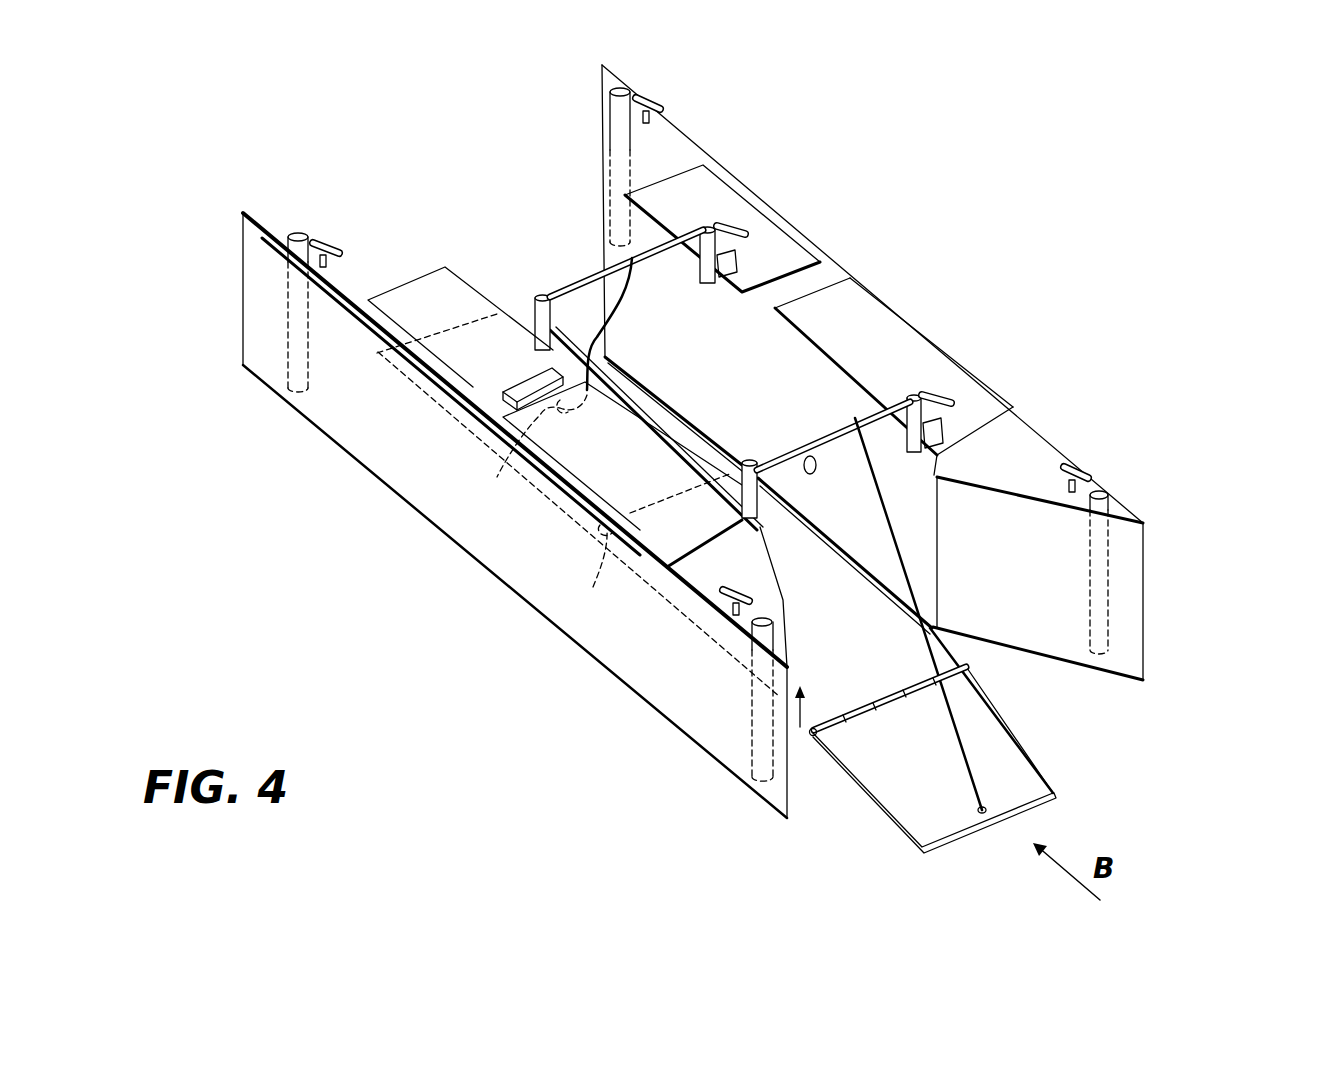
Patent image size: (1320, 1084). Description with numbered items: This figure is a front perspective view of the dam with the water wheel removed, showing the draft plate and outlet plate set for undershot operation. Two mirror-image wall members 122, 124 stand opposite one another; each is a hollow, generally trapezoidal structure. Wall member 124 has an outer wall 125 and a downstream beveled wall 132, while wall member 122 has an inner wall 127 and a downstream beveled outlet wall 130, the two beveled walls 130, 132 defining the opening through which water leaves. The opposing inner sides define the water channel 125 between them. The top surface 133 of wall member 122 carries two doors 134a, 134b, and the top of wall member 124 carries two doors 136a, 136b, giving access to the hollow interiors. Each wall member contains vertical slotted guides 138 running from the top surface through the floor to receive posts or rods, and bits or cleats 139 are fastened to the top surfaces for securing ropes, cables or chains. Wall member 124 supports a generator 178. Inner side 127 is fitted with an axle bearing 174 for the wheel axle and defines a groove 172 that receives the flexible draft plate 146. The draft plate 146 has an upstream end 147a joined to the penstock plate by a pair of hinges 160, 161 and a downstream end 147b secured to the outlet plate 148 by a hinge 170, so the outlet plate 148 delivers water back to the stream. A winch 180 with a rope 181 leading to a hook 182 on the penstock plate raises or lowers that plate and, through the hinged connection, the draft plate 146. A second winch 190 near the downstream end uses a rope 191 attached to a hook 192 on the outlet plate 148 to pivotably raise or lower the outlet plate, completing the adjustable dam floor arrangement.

The wall member 122 is at (1198, 607).
The wall member 124 is at (661, 737).
The outer wall 125 is at (521, 302).
The inner wall 127 is at (692, 300).
The downstream beveled outlet wall 130 is at (1050, 637).
The downstream beveled wall 132 is at (790, 752).
The top surface 133 is at (1012, 463).
The door 134a is at (707, 195).
The door 134b is at (855, 303).
The door 136a is at (428, 298).
The door 136b is at (572, 455).
The slotted guide 138 is at (297, 232).
The bit or cleat 139 is at (322, 243).
The flexible draft plate 146 is at (815, 735).
The upstream end 147a is at (770, 508).
The downstream end 147b is at (863, 671).
The outlet plate 148 is at (930, 779).
The hinge 160 is at (737, 468).
The hinge 161 is at (590, 569).
The hinge 170 is at (978, 668).
The groove 172 is at (802, 410).
The axle bearing 174 is at (810, 474).
The generator 178 is at (520, 384).
The winch 180 is at (573, 277).
The rope 181 is at (623, 313).
The hook 182 is at (522, 443).
The winch 190 is at (875, 415).
The rope 191 is at (875, 505).
The hook 192 is at (980, 812).